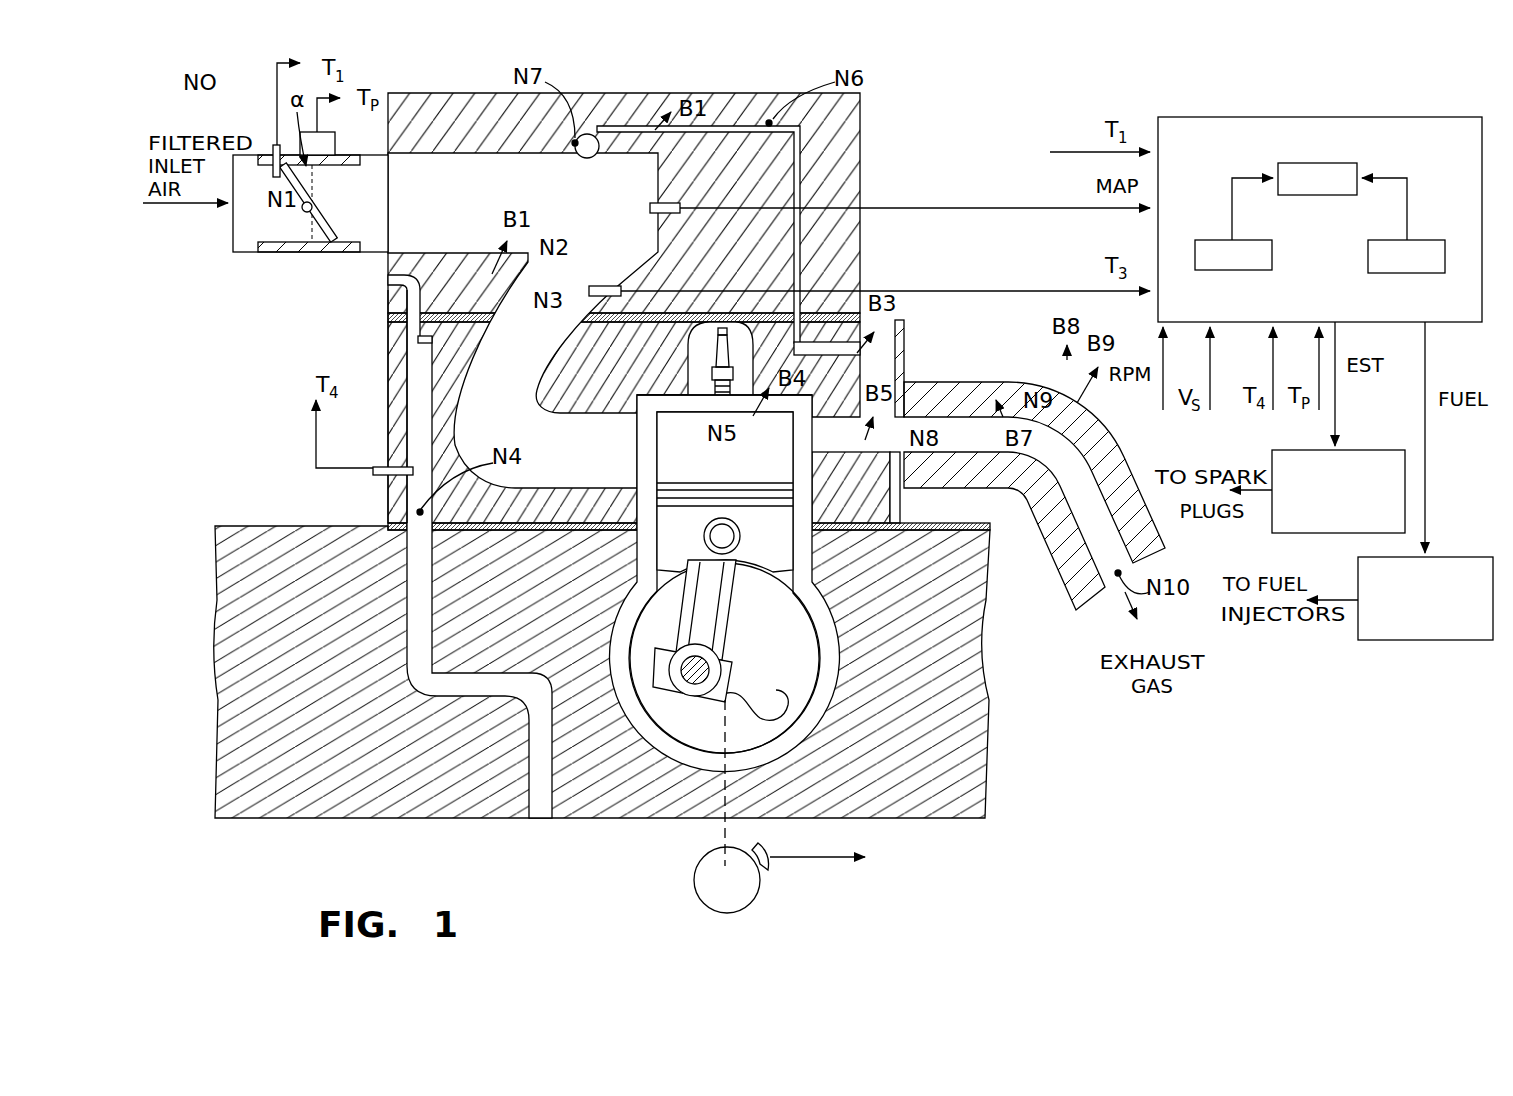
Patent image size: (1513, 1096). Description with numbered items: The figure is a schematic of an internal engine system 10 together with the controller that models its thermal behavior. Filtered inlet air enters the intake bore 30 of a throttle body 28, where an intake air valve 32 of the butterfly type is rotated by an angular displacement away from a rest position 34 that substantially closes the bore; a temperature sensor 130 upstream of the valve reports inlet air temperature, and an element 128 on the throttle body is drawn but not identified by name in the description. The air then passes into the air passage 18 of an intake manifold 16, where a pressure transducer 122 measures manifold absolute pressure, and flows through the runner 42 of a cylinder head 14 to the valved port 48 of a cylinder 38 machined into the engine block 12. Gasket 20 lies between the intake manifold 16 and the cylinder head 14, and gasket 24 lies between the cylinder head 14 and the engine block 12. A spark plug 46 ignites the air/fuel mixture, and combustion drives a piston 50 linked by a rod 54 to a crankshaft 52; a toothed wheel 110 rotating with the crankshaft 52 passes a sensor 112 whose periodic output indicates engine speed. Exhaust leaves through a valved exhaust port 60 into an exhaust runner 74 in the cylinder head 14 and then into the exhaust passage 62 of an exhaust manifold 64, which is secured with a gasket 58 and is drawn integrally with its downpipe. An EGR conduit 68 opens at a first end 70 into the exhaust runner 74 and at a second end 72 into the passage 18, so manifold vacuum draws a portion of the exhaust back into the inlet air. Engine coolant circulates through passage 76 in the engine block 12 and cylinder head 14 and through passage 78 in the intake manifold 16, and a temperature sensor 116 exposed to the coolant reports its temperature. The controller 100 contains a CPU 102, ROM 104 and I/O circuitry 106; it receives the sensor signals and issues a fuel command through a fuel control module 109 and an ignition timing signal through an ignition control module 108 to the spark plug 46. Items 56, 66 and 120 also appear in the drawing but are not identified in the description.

The engine system 10 is at (205, 407).
The engine block 12 is at (224, 577).
The cylinder head 14 is at (890, 333).
The intake manifold 16 is at (725, 102).
The air passage 18 is at (635, 179).
The gasket 20 is at (786, 314).
The gasket 24 is at (457, 537).
The throttle body 28 is at (340, 256).
The intake bore 30 is at (278, 220).
The intake air valve 32 is at (322, 237).
The rest position 34 is at (315, 183).
The cylinder 38 is at (862, 620).
The runner 42 is at (498, 378).
The spark plug 46 is at (719, 352).
The valved port 48 is at (725, 492).
The piston 50 is at (805, 470).
The crankshaft 52 is at (778, 658).
The rod 54 is at (712, 606).
The crankshaft 56 is at (747, 720).
The gasket 58 is at (900, 333).
The valved exhaust port 60 is at (815, 405).
The exhaust passage 62 is at (1082, 495).
The exhaust manifold 64 is at (1043, 500).
The piston rings 66 is at (680, 492).
The EGR conduit 68 is at (802, 187).
The first end 70 is at (848, 418).
The second end 72 is at (590, 138).
The exhaust runner 74 is at (888, 433).
The coolant passage 76 is at (545, 810).
The coolant passage 78 is at (425, 340).
The controller 100 is at (1430, 118).
The CPU 102 is at (1350, 168).
The ROM 104 is at (1443, 251).
The I/O circuitry 106 is at (1265, 265).
The ignition control module 108 is at (1394, 450).
The fuel control module 109 is at (1457, 641).
The toothed wheel 110 is at (703, 882).
The sensor 112 is at (773, 870).
The temperature sensor 116 is at (375, 471).
The temperature sensor 120 is at (592, 286).
The pressure transducer 122 is at (648, 208).
The throttle position sensor 128 is at (322, 143).
The temperature sensor 130 is at (273, 147).